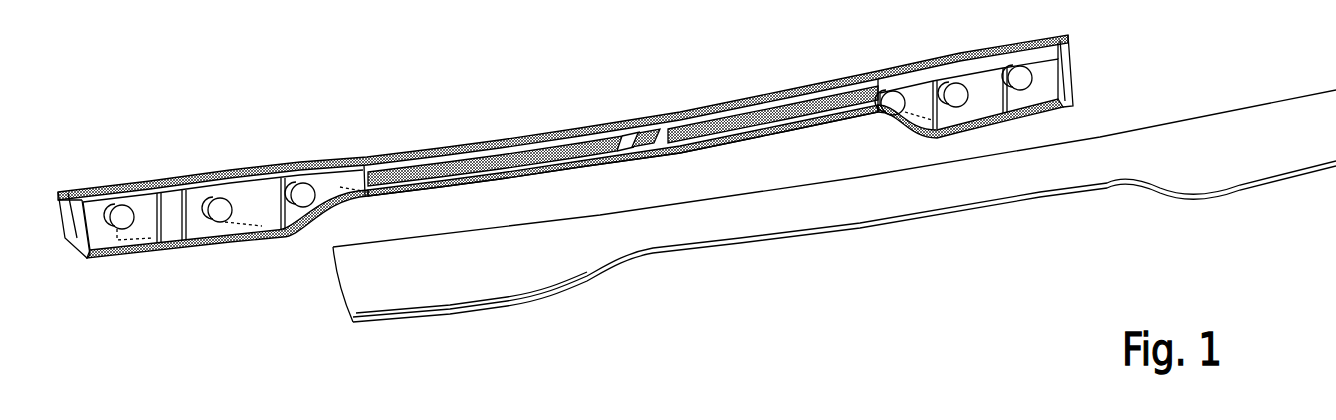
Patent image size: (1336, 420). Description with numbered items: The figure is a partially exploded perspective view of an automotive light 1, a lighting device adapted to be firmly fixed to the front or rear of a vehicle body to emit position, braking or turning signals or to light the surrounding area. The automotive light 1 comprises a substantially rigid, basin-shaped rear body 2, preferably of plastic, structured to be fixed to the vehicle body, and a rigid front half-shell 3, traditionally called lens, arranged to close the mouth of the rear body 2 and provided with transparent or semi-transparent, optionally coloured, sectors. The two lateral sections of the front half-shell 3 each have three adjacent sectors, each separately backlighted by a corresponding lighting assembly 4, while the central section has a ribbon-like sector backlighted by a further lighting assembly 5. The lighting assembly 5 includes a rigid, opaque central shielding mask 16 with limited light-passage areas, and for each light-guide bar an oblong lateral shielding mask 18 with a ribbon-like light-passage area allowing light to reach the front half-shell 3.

The automotive light 1 is at (262, 118).
The rear body 2 is at (177, 178).
The front half-shell 3 is at (505, 288).
The lighting assembly 4 is at (244, 213).
The lighting assembly 5 is at (669, 165).
The central shielding mask 16 is at (647, 137).
The lateral shielding mask 18 is at (475, 163).